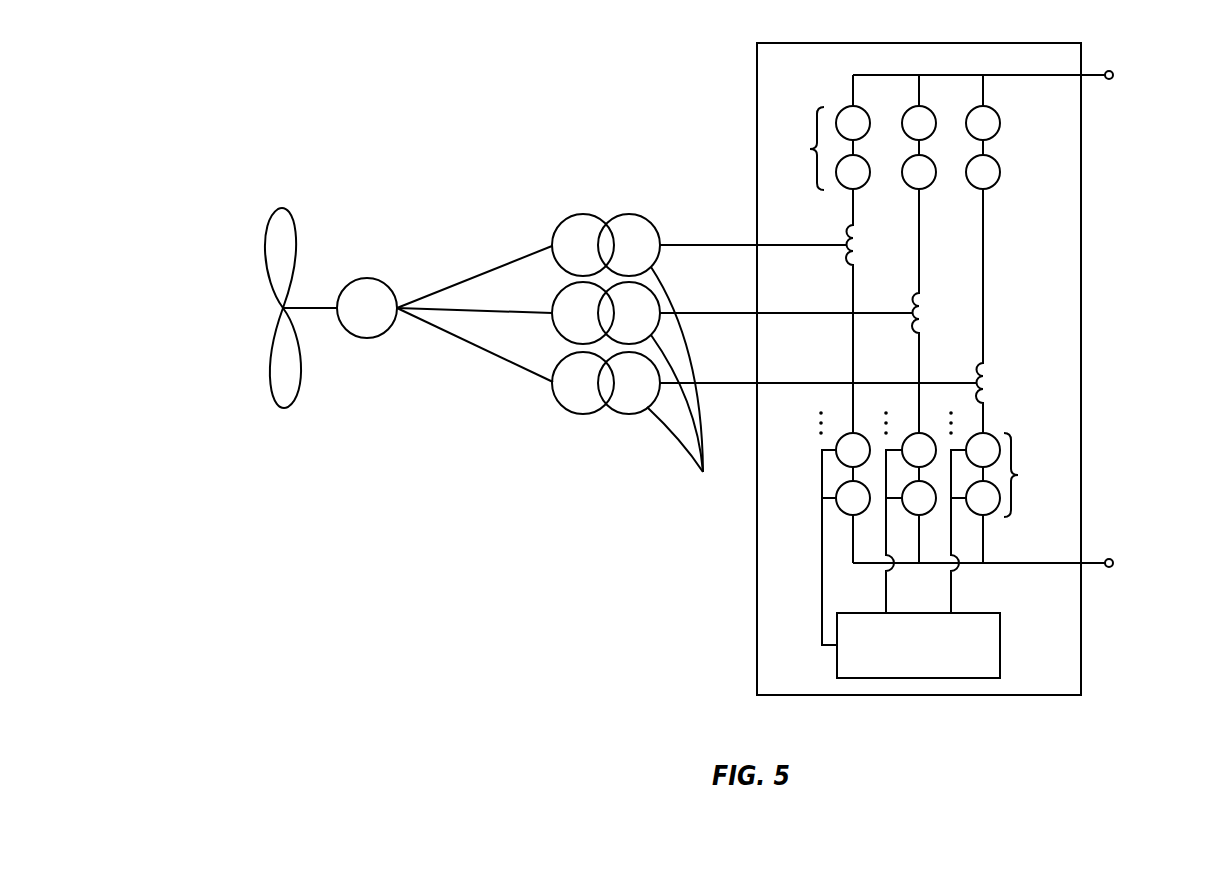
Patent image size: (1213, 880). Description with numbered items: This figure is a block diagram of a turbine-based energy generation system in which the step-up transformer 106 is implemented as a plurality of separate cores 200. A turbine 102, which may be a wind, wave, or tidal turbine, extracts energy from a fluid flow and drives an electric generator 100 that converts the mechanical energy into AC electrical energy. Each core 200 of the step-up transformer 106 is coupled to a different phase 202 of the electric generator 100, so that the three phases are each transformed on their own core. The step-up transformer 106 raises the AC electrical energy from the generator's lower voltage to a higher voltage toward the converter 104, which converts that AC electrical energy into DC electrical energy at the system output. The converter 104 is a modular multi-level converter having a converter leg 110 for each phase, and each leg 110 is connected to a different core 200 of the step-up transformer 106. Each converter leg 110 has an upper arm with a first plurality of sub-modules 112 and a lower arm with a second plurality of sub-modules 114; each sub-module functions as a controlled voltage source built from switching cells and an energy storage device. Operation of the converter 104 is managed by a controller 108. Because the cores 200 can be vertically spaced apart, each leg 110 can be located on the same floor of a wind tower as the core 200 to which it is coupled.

The electric generator 100 is at (362, 268).
The turbine 102 is at (281, 207).
The converter 104 is at (1016, 695).
The step-up transformer 106 is at (565, 451).
The controller 108 is at (933, 668).
The converter leg 110 is at (870, 92).
The first plurality of sub-modules 112 is at (798, 148).
The second plurality of sub-modules 114 is at (950, 475).
The cores 200 is at (812, 371).
The phase 202 is at (508, 355).